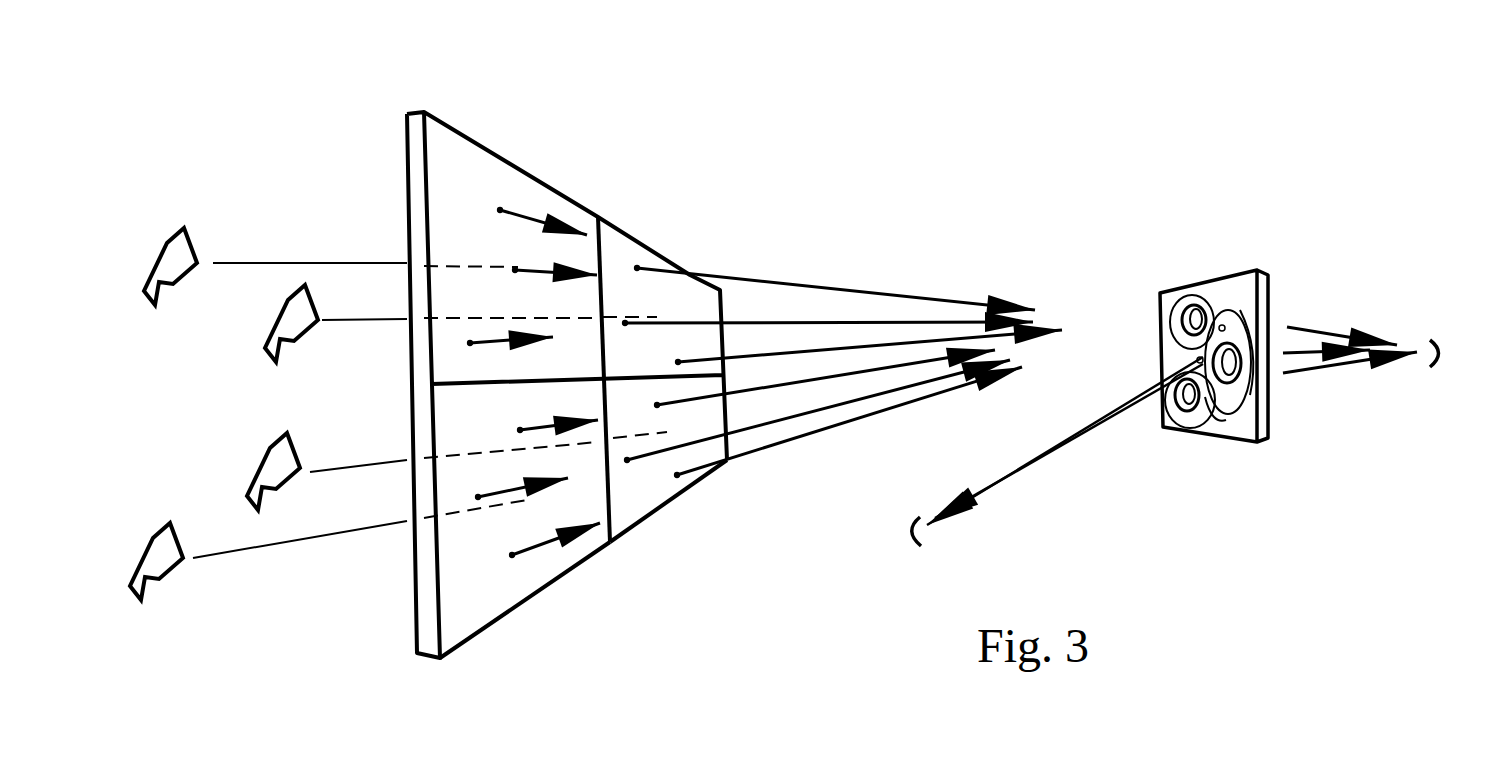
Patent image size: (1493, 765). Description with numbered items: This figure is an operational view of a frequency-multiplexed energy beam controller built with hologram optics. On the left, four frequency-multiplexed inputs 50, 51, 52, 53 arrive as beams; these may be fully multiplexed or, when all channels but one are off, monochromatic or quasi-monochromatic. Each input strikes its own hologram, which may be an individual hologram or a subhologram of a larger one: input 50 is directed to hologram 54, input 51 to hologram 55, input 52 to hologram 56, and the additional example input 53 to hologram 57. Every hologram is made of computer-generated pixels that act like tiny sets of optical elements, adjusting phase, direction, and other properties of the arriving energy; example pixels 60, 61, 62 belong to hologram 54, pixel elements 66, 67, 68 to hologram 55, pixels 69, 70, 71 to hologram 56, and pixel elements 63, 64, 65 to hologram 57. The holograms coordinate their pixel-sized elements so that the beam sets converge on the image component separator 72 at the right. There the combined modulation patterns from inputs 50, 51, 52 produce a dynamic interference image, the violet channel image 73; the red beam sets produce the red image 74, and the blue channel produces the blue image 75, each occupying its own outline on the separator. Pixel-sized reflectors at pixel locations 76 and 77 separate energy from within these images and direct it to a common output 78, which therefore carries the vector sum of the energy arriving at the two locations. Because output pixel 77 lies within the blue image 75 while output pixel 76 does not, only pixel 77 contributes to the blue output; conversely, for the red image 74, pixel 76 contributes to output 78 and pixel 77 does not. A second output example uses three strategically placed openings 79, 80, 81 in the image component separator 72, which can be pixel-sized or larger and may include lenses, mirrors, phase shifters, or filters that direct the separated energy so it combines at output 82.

The frequency-multiplexed input 50 is at (316, 266).
The frequency-multiplexed input 51 is at (442, 323).
The frequency-multiplexed input 52 is at (440, 471).
The frequency-multiplexed input 53 is at (313, 550).
The hologram 54 is at (516, 181).
The hologram 55 is at (637, 258).
The hologram 56 is at (653, 509).
The hologram 57 is at (540, 587).
The pixel 60 is at (525, 215).
The pixel 61 is at (539, 282).
The pixel 62 is at (495, 344).
The pixel element 63 is at (541, 429).
The pixel element 64 is at (507, 486).
The pixel element 65 is at (540, 555).
The pixel element 66 is at (825, 288).
The pixel element 67 is at (822, 338).
The pixel element 68 is at (858, 347).
The pixel 69 is at (808, 383).
The pixel 70 is at (812, 424).
The pixel 71 is at (833, 432).
The image component separator 72 is at (1266, 302).
The violet channel image 73 is at (1182, 290).
The red image 74 is at (1233, 408).
The blue image 75 is at (1209, 425).
The output pixel 76 is at (1220, 325).
The output pixel 77 is at (1197, 357).
The common output 78 is at (1040, 452).
The opening 79 is at (1182, 315).
The opening 80 is at (1177, 402).
The opening 81 is at (1233, 380).
The output 82 is at (1380, 350).